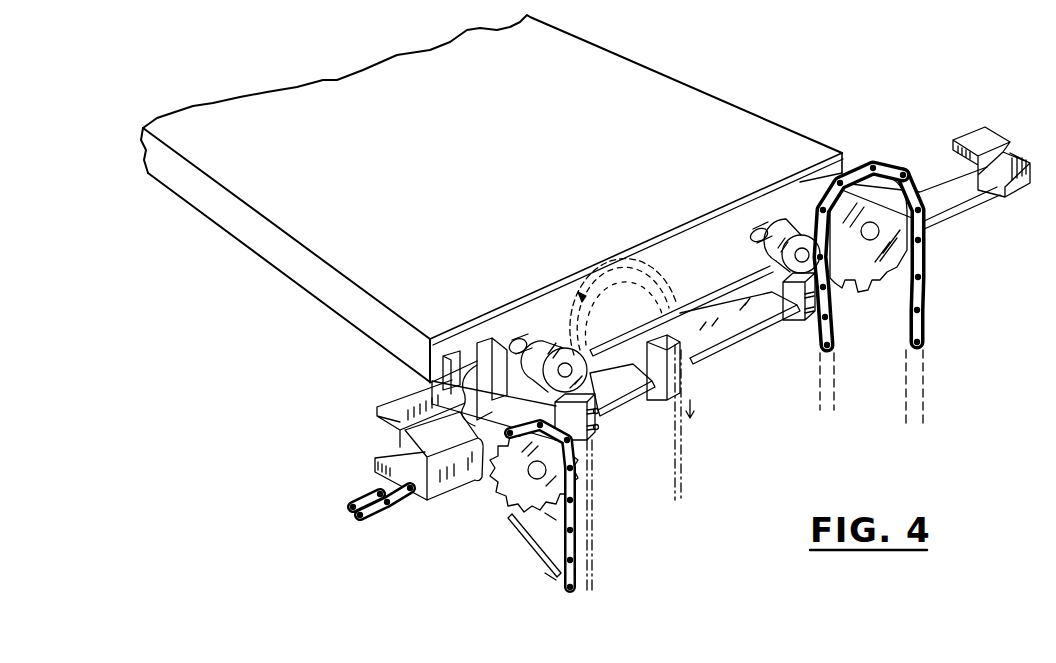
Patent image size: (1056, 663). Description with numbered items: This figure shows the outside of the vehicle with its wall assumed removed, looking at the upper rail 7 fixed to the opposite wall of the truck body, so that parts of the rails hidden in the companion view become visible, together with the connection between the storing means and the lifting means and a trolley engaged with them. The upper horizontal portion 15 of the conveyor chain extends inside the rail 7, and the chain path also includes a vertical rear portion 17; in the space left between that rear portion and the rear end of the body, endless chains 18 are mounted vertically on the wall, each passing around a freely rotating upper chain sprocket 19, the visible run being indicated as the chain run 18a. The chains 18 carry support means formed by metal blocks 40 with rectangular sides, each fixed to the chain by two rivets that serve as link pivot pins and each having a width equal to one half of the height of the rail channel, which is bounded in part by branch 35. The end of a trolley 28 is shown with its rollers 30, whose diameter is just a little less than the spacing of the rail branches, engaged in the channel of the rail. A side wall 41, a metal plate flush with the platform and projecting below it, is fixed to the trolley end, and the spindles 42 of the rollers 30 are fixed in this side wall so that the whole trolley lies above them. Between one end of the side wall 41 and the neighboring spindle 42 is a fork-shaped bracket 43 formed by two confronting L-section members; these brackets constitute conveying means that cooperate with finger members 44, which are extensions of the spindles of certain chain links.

The upper rail 7 is at (462, 500).
The upper horizontal portion 15 is at (403, 507).
The vertical rear portion 17 is at (553, 578).
The endless chain 18 is at (682, 443).
The chain run 18a is at (925, 327).
The upper chain sprocket 19 is at (858, 268).
The trolley 28 is at (733, 122).
The rolling roller 30 is at (553, 348).
The branch of the rail 35 is at (987, 137).
The block 40 is at (662, 387).
The side wall 41 is at (817, 173).
The spindle 42 is at (766, 222).
The bracket 43 is at (402, 363).
The finger member 44 is at (493, 340).